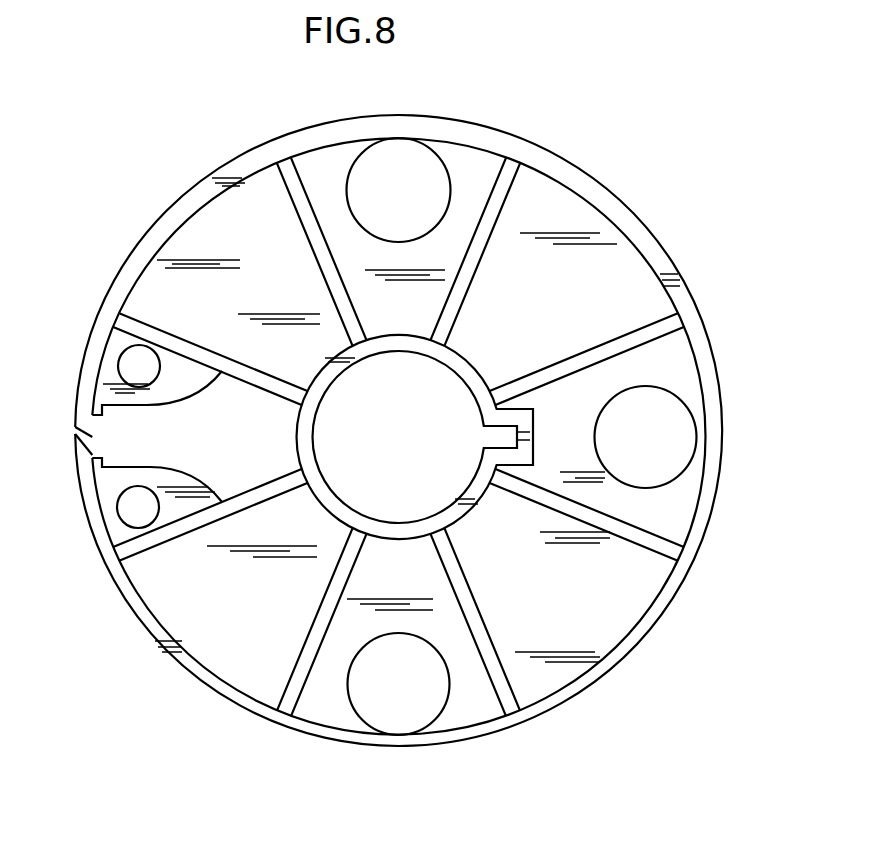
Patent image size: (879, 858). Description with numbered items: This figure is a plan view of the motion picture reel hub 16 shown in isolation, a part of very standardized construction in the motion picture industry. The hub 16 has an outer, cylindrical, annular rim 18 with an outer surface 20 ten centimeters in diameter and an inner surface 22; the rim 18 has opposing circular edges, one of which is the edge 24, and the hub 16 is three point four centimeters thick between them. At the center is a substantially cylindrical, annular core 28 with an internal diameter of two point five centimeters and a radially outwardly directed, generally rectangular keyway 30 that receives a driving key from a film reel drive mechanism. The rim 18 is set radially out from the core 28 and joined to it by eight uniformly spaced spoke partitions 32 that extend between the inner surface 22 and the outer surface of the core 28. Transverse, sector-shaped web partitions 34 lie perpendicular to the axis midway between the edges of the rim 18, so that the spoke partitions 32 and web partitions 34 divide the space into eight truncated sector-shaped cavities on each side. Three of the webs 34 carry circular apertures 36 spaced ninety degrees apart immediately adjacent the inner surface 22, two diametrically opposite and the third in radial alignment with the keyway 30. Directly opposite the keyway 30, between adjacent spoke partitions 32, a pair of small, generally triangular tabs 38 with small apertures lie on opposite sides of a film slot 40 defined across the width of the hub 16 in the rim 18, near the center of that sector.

The hub 16 is at (648, 218).
The rim 18 is at (667, 610).
The outer surface 20 is at (716, 510).
The inner surface 22 is at (613, 640).
The edge 24 is at (218, 687).
The core 28 is at (473, 358).
The keyway 30 is at (513, 438).
The spoke partitions 32 is at (185, 338).
The web partitions 34 is at (219, 228).
The apertures 36 is at (434, 160).
The tabs 38 is at (193, 485).
The film slot 40 is at (75, 427).